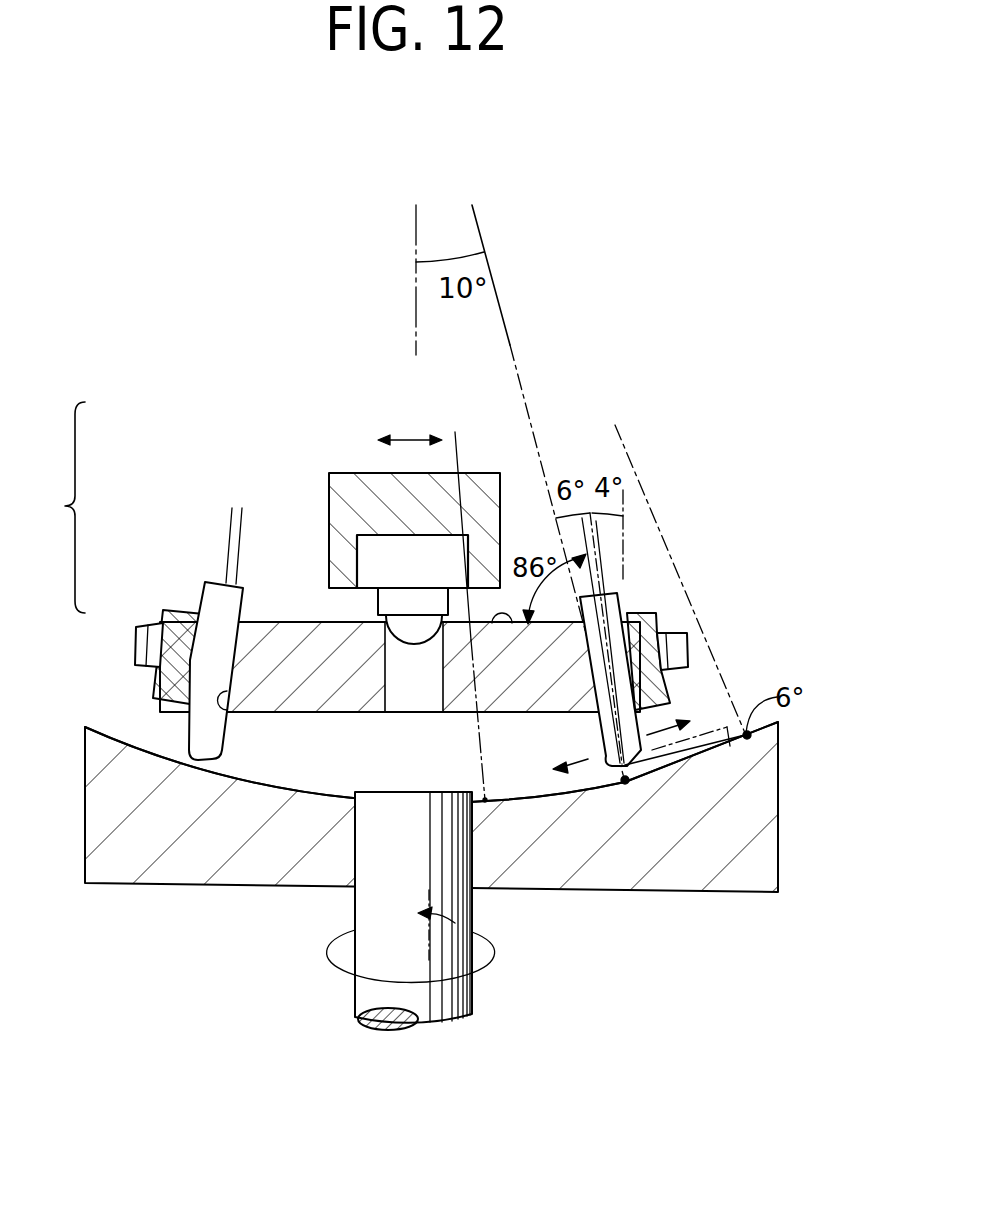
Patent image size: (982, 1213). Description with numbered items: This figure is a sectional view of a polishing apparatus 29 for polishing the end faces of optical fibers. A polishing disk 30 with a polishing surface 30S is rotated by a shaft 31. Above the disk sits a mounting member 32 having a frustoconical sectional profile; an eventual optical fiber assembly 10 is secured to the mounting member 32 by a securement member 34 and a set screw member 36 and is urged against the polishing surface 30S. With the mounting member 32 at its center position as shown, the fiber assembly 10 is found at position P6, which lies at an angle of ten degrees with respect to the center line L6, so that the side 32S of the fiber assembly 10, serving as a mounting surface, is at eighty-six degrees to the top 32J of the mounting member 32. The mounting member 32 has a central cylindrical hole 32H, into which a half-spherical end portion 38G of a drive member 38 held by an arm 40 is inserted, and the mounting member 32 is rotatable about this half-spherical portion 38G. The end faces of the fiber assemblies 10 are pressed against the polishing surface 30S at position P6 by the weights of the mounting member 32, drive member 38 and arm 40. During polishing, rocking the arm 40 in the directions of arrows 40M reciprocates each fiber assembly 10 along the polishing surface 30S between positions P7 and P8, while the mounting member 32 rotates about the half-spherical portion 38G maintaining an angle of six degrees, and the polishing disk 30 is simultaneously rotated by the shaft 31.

The eventual optical fiber assembly 10 is at (612, 608).
The polishing apparatus 29 is at (53, 507).
The polishing disk 30 is at (158, 787).
The polishing surface 30S is at (112, 733).
The shaft 31 is at (385, 802).
The mounting member 32 is at (307, 621).
The central cylindrical hole 32H is at (388, 680).
The top of the mounting member 32J is at (512, 622).
The side 32S is at (228, 711).
The securement member 34 is at (630, 616).
The set screw member 36 is at (677, 651).
The drive member 38 is at (417, 598).
The half-spherical end portion 38G is at (387, 650).
The arm 40 is at (367, 490).
The arrows 40M is at (402, 440).
The reference line L6 is at (517, 362).
The position P6 is at (625, 783).
The position P7 is at (485, 800).
The position P8 is at (750, 736).